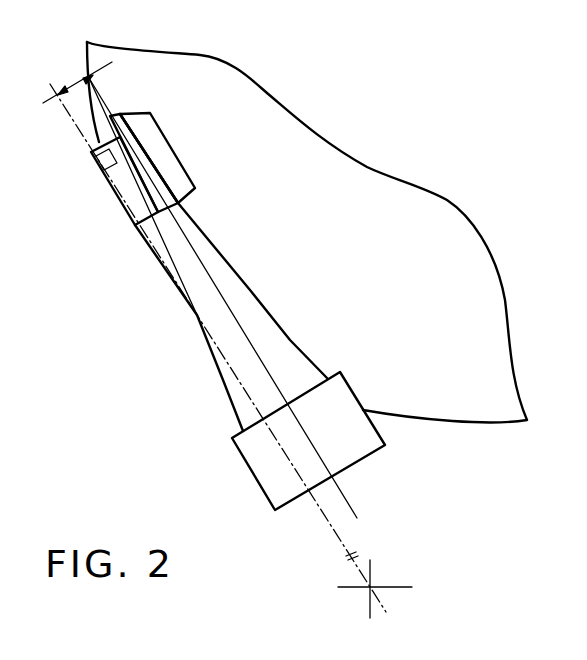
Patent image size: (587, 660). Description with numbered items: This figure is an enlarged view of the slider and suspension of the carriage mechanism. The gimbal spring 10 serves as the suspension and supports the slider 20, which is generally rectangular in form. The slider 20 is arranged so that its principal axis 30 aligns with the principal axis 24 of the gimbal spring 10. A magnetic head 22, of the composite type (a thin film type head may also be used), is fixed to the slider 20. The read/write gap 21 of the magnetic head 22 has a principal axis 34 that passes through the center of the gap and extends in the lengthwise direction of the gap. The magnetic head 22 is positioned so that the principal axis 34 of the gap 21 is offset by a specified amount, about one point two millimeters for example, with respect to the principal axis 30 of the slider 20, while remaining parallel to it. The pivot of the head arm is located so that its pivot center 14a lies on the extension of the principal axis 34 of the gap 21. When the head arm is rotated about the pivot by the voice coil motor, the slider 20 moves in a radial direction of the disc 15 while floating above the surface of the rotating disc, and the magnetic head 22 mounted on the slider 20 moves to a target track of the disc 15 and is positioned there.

The gimbal spring 10 is at (195, 337).
The disc 15 is at (440, 413).
The slider 20 is at (124, 208).
The read/write gap 21 is at (104, 163).
The magnetic head 22 is at (110, 188).
The principal axis of spring 24 is at (220, 297).
The principal axis of slider 30 is at (145, 160).
The principal axis of gap 34 is at (88, 132).
The pivot center 14a is at (372, 586).